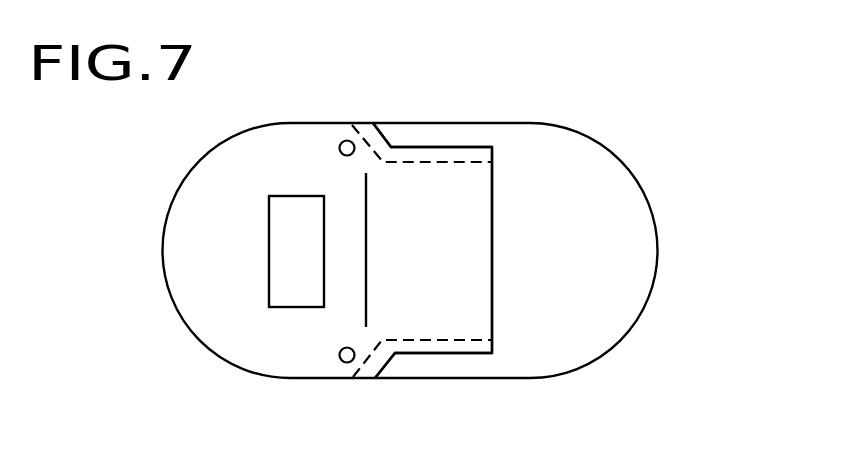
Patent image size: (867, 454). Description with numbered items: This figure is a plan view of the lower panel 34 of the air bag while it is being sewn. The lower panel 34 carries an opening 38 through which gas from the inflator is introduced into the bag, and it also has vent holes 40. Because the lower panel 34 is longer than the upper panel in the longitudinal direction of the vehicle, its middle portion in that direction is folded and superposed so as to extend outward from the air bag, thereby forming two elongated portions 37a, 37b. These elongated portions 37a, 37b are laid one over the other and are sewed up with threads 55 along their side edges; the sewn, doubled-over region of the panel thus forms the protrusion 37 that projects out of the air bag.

The lower panel 34 is at (622, 203).
The protrusion 37 is at (503, 212).
The elongated portion 37a is at (478, 273).
The elongated portion 37b is at (478, 317).
The opening 38 is at (292, 292).
The vent holes 40 is at (342, 141).
The threads 55 is at (453, 163).